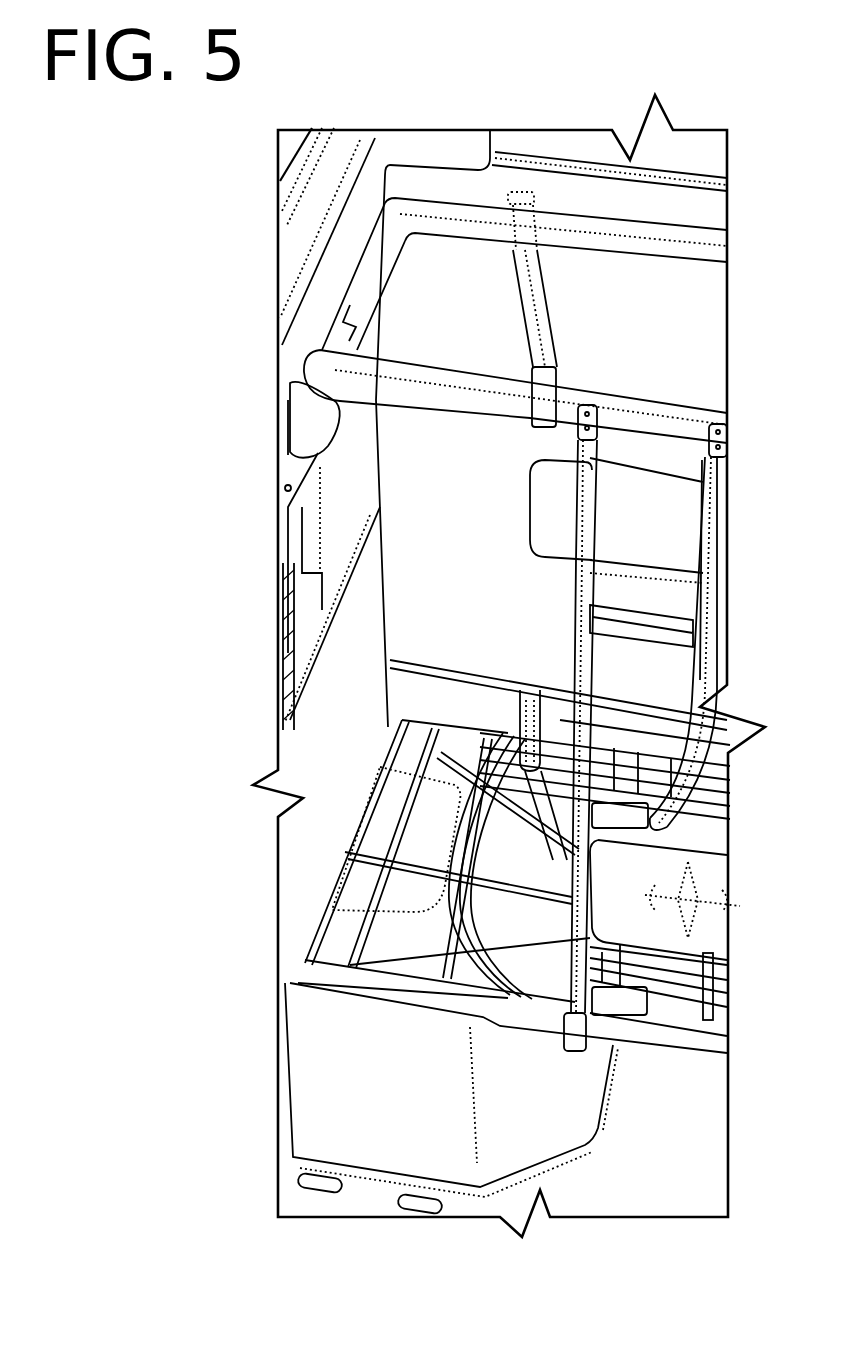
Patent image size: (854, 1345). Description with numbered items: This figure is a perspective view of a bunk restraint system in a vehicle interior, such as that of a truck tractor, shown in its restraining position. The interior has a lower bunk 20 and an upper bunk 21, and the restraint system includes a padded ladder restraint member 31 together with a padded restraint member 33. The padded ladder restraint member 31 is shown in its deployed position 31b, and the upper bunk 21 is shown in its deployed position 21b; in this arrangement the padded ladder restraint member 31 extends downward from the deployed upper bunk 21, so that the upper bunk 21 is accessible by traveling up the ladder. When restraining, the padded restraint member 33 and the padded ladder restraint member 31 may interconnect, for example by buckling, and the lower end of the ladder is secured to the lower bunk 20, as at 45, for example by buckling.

The lower bunk 20 is at (703, 1043).
The upper bunk 21 is at (463, 317).
The deployed position 21b is at (560, 391).
The padded ladder restraint member 31 is at (565, 609).
The deployed position 31b is at (580, 502).
The padded restraint member 33 is at (710, 883).
The securing point 45 is at (572, 1051).